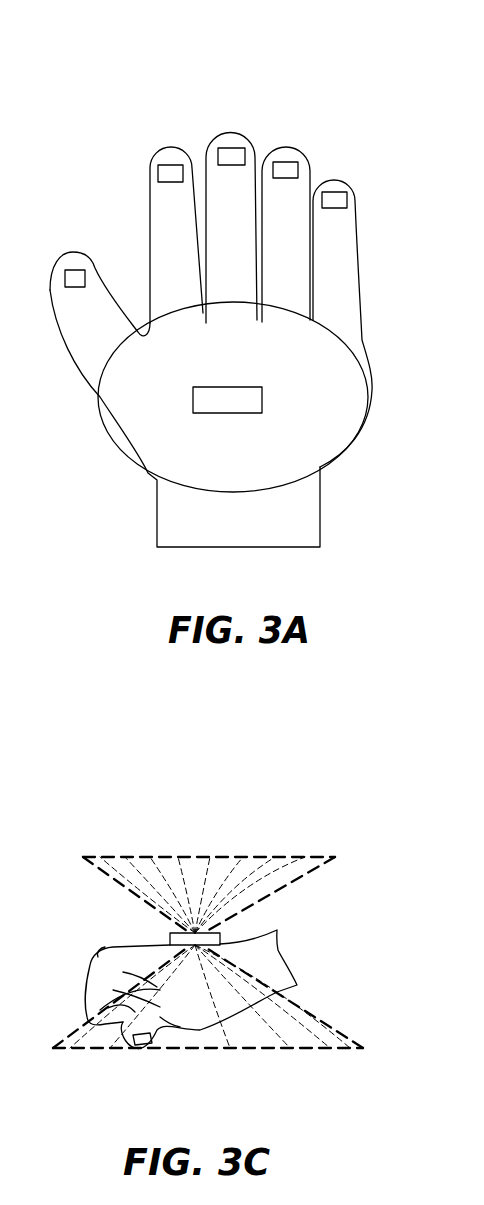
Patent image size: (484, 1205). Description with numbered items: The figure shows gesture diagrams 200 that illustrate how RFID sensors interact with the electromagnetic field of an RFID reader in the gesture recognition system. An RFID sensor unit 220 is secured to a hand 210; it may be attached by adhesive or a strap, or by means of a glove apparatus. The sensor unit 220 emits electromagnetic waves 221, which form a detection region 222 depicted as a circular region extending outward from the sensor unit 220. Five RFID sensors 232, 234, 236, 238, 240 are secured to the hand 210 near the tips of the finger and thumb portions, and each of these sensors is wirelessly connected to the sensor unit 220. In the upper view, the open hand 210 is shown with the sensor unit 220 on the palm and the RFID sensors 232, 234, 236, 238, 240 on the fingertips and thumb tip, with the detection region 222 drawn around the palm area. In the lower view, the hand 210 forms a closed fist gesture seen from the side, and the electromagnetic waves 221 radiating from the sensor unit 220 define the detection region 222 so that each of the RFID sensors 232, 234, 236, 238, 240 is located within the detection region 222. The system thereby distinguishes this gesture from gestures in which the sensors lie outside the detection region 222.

In FIG. 3A, the gesture diagram 200 is at (137, 112).
In FIG. 3C, the gesture diagram 200 is at (98, 832).
In FIG. 3A, the hand 210 is at (307, 525).
In FIG. 3C, the hand 210 is at (273, 957).
In FIG. 3A, the RFID sensor unit 220 is at (235, 413).
In FIG. 3C, the RFID sensor unit 220 is at (223, 933).
In FIG. 3C, the electromagnetic waves 221 is at (210, 872).
In FIG. 3A, the detection region 222 is at (337, 358).
In FIG. 3C, the detection region 222 is at (277, 857).
In FIG. 3A, the RFID sensor 232 is at (170, 165).
In FIG. 3A, the RFID sensor 234 is at (232, 148).
In FIG. 3A, the RFID sensor 236 is at (288, 162).
In FIG. 3A, the RFID sensor 238 is at (337, 192).
In FIG. 3A, the RFID sensor 240 is at (75, 270).
In FIG. 3C, the RFID sensor 240 is at (140, 1047).